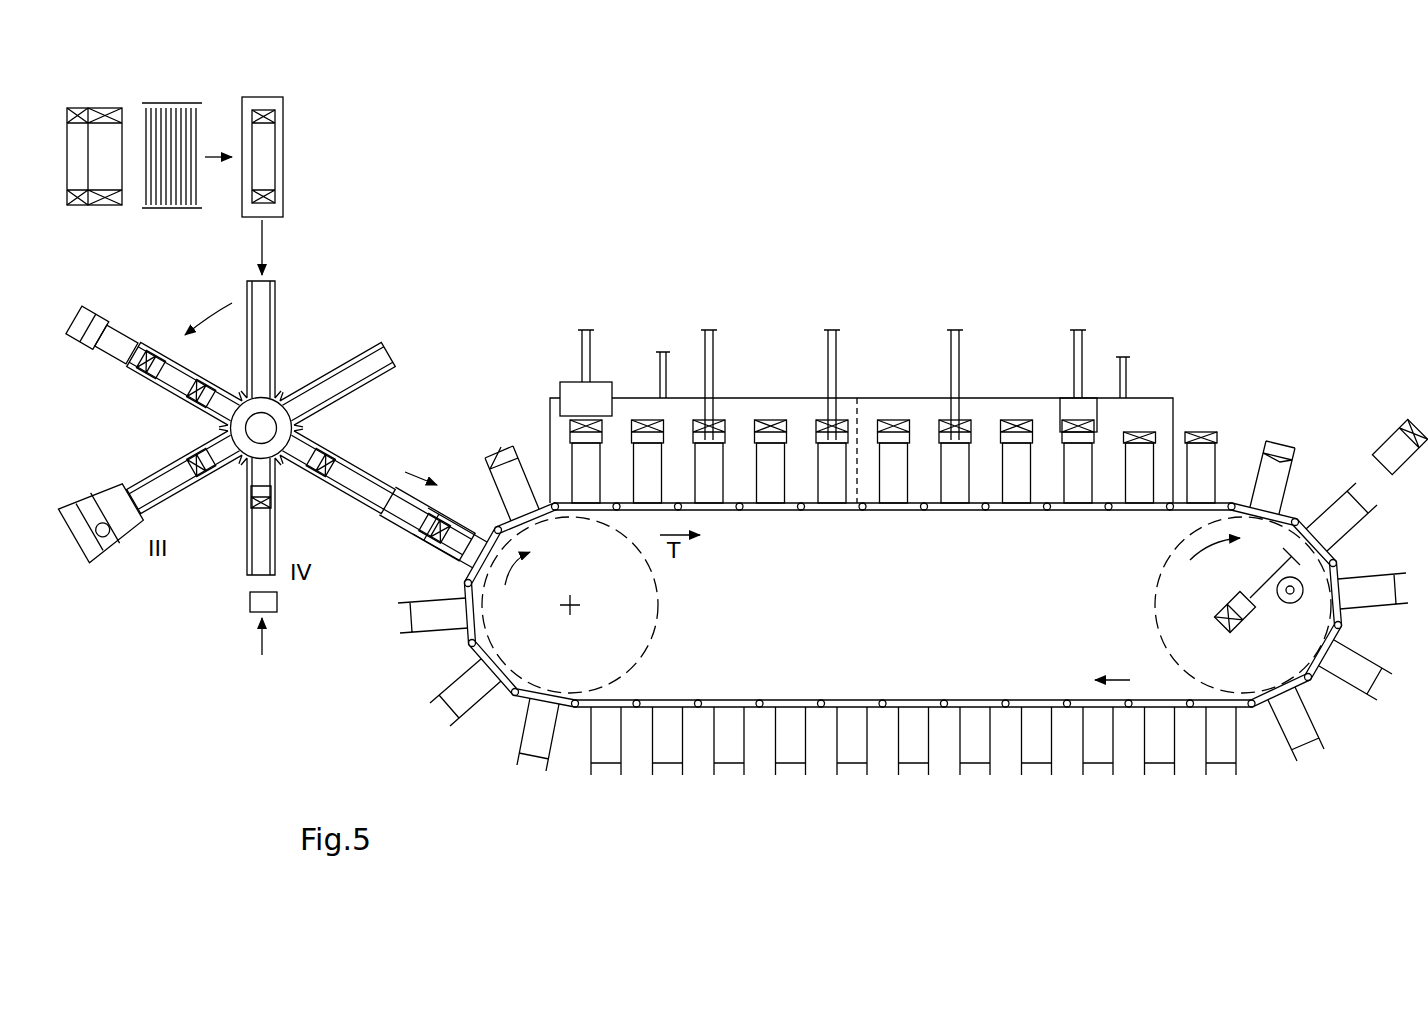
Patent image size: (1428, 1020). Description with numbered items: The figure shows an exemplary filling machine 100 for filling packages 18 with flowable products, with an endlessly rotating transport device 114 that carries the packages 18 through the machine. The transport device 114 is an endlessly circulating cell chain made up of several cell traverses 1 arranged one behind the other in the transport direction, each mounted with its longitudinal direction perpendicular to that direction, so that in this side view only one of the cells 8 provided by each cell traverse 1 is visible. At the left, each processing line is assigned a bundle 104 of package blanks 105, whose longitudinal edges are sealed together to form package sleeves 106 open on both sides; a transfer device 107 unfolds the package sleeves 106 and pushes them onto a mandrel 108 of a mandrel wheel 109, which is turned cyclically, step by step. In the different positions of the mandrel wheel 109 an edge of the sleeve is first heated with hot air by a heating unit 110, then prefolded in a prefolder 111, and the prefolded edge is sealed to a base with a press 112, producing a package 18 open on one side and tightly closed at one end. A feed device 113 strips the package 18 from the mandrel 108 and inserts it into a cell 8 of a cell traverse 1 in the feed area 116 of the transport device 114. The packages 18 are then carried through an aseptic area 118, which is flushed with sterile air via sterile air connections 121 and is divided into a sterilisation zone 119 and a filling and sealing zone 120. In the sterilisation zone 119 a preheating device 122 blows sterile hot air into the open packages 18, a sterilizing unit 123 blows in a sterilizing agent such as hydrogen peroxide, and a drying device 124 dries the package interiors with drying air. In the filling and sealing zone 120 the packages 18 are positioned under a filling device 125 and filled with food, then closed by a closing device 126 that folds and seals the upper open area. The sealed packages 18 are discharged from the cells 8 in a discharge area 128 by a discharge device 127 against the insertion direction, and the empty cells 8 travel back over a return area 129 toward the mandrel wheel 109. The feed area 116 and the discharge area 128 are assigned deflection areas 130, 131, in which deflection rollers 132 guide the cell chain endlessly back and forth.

The cell traverse 1 is at (523, 440).
The cell 8 is at (497, 483).
The package 18 is at (347, 495).
The filling machine 100 is at (562, 160).
The bundle 104 is at (162, 228).
The package blank 105 is at (150, 130).
The package sleeve 106 is at (268, 152).
The transfer device 107 is at (283, 112).
The mandrel 108 is at (268, 330).
The mandrel wheel 109 is at (176, 600).
The heating unit 110 is at (80, 338).
The prefolder 111 is at (104, 562).
The press 112 is at (280, 602).
The feed device 113 is at (397, 530).
The transport device 114 is at (770, 505).
The feed area 116 is at (388, 632).
The aseptic area 118 is at (618, 300).
The sterilisation zone 119 is at (745, 410).
The filling and sealing zone 120 is at (990, 440).
The sterile air connection 121 is at (665, 355).
The preheating device 122 is at (572, 390).
The sterilizing unit 123 is at (710, 330).
The drying device 124 is at (833, 330).
The filling device 125 is at (956, 330).
The closing device 126 is at (1080, 330).
The discharge device 127 is at (1222, 608).
The discharge area 128 is at (1355, 370).
The return area 129 is at (882, 770).
The deflection area 130 is at (625, 600).
The deflection area 131 is at (1178, 585).
The deflection roller 132 is at (565, 660).